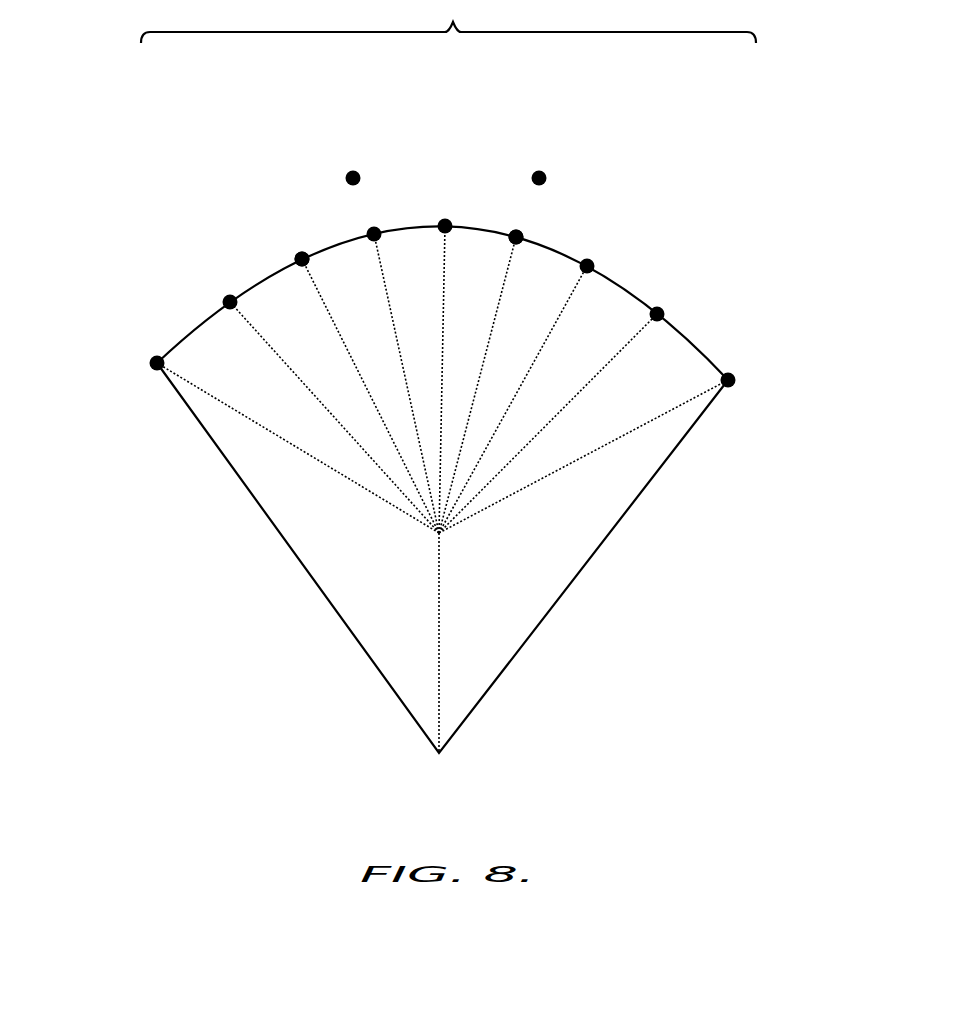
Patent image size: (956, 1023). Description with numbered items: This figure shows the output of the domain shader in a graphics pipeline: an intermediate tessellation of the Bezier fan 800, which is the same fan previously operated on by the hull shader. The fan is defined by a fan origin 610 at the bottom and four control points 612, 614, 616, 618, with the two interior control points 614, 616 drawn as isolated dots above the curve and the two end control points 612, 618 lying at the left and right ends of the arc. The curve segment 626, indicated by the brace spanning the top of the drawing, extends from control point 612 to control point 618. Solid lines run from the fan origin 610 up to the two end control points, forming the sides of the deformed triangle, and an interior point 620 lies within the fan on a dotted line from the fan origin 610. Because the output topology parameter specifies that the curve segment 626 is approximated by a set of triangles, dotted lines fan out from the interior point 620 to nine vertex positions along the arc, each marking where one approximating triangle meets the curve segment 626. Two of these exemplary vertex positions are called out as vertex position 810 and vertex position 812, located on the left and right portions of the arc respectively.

The Bezier fan 800 is at (98, 205).
The curve segment 626 is at (448, 21).
The control point 614 is at (360, 174).
The control point 616 is at (532, 174).
The control point 612 is at (137, 395).
The control point 618 is at (760, 403).
The interior point 620 is at (430, 542).
The fan origin 610 is at (442, 780).
The vertex position 810 is at (310, 260).
The vertex position 812 is at (520, 243).